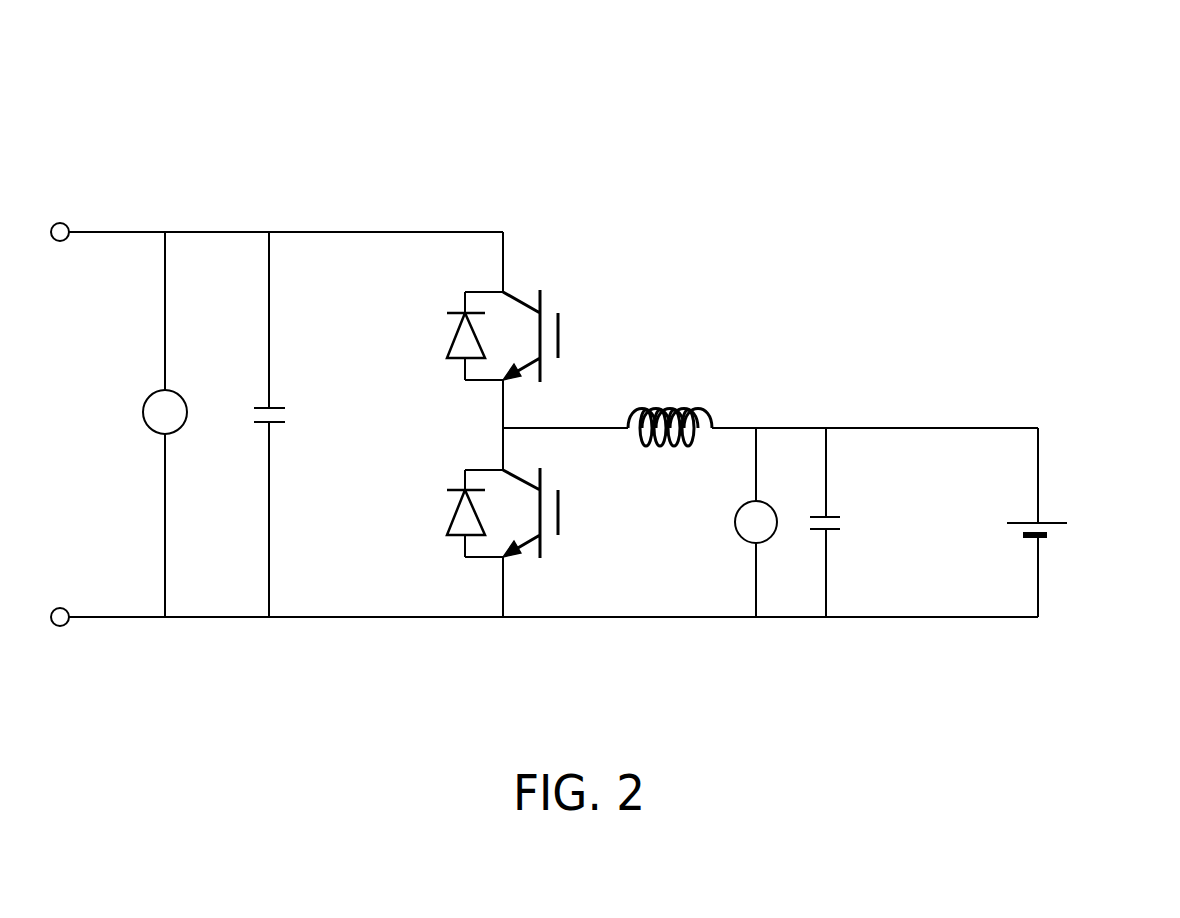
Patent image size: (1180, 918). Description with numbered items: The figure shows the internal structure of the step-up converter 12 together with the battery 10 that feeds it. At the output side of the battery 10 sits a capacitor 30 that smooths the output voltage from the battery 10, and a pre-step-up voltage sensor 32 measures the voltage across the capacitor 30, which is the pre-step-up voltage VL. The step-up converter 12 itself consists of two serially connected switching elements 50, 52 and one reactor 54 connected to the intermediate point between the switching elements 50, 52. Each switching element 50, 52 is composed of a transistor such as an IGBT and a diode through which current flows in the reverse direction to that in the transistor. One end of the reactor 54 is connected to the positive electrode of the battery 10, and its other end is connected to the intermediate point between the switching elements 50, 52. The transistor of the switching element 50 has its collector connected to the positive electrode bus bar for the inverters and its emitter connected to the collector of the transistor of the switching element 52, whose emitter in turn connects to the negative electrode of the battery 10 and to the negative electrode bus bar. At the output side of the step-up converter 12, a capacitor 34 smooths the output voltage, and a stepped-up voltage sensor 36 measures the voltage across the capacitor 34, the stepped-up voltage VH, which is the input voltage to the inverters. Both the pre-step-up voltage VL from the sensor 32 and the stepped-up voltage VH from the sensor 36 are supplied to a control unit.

The battery 10 is at (1060, 517).
The step-up converter 12 is at (509, 203).
The capacitor 30 is at (818, 533).
The pre-step-up voltage sensor 32 is at (740, 541).
The capacitor 34 is at (276, 405).
The stepped-up voltage sensor 36 is at (157, 396).
The switching element 50 is at (559, 295).
The switching element 52 is at (553, 545).
The reactor 54 is at (689, 410).